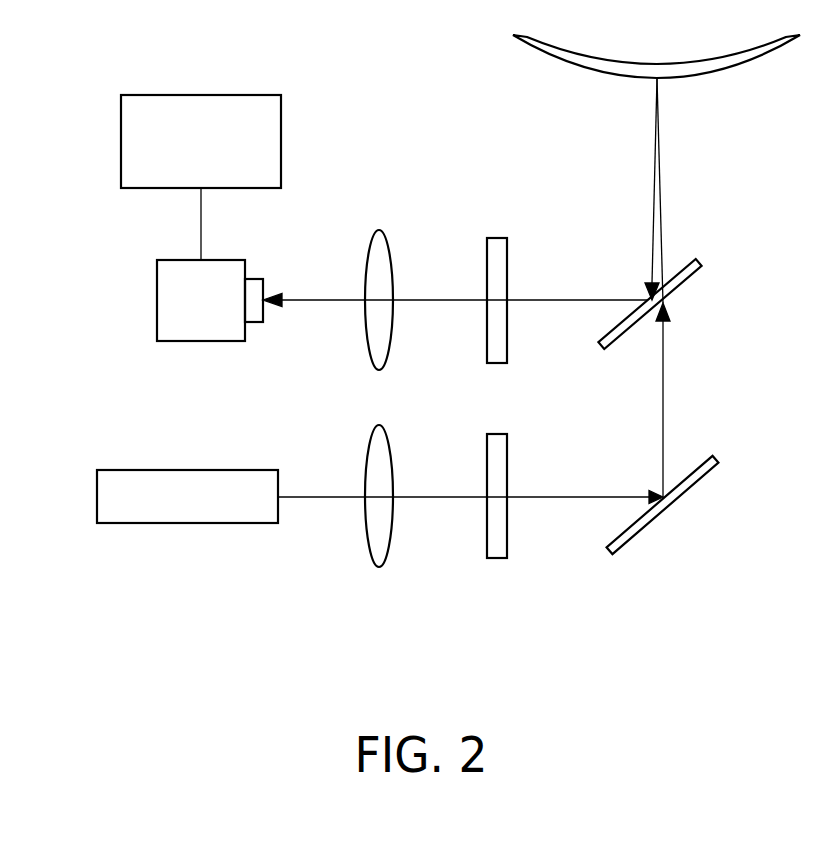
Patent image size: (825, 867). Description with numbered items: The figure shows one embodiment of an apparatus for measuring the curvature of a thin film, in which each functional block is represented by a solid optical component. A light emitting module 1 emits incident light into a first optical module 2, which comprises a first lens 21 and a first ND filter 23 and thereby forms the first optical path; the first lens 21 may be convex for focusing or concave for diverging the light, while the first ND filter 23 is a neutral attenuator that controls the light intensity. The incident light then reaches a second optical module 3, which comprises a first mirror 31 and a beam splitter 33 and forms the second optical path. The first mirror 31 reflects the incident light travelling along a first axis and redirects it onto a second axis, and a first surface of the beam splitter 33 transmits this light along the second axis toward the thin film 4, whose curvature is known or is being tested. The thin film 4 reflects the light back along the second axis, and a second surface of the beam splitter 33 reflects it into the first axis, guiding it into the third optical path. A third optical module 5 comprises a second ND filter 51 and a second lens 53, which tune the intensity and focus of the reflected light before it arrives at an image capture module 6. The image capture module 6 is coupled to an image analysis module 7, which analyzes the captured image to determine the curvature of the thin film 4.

The light emitting module 1 is at (158, 470).
The first optical module 2 is at (362, 618).
The first lens 21 is at (379, 555).
The first ND filter 23 is at (497, 553).
The second optical module 3 is at (753, 277).
The first mirror 31 is at (717, 458).
The beam splitter 33 is at (688, 283).
The thin film 4 is at (722, 73).
The third optical module 5 is at (362, 180).
The second ND filter 51 is at (497, 243).
The second lens 53 is at (379, 243).
The image capture module 6 is at (157, 299).
The image analysis module 7 is at (193, 95).